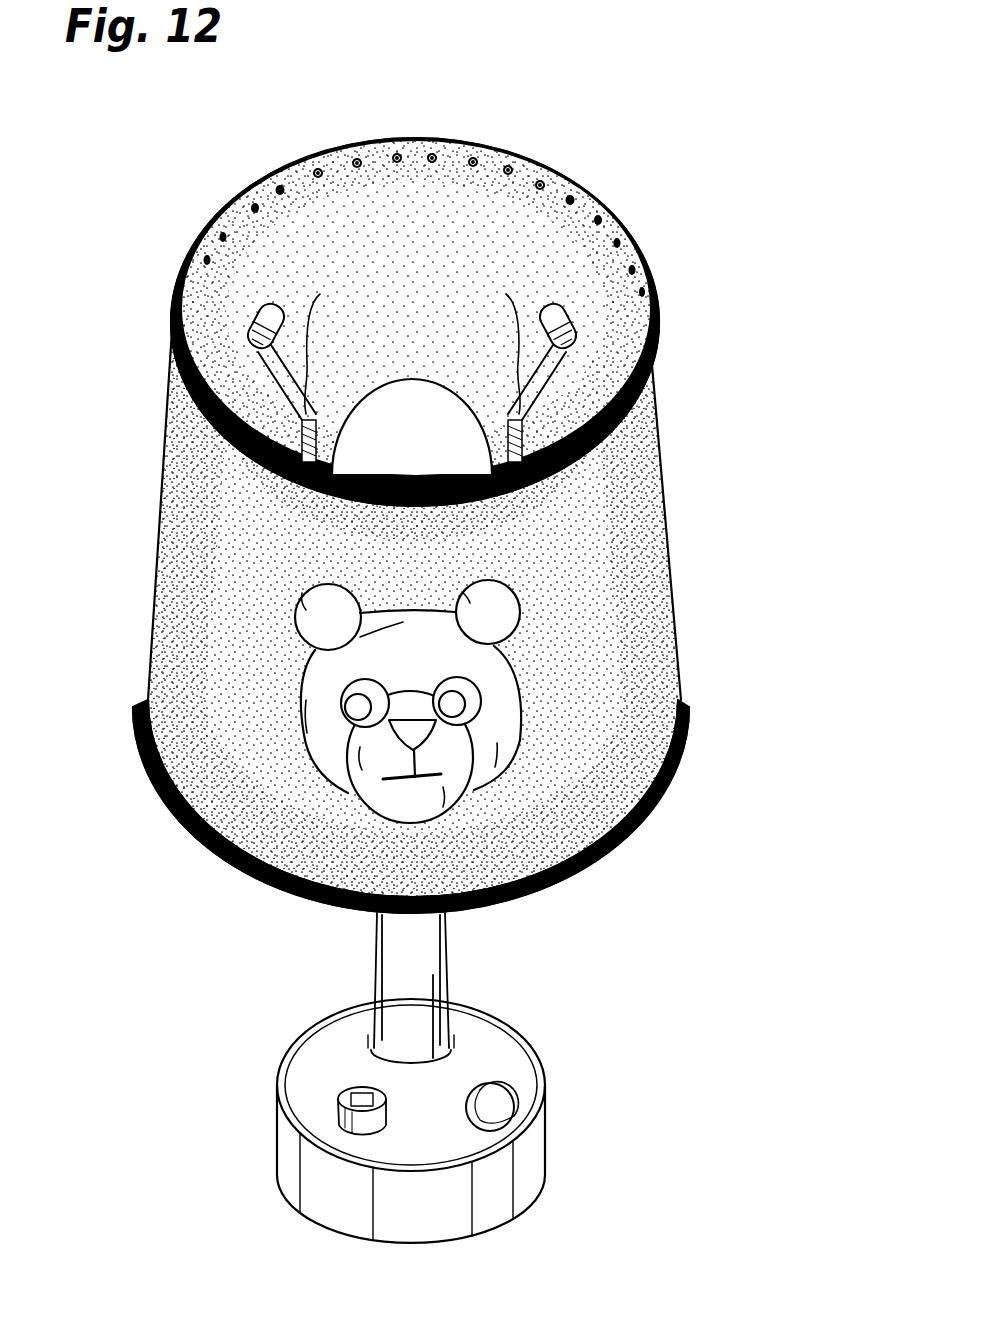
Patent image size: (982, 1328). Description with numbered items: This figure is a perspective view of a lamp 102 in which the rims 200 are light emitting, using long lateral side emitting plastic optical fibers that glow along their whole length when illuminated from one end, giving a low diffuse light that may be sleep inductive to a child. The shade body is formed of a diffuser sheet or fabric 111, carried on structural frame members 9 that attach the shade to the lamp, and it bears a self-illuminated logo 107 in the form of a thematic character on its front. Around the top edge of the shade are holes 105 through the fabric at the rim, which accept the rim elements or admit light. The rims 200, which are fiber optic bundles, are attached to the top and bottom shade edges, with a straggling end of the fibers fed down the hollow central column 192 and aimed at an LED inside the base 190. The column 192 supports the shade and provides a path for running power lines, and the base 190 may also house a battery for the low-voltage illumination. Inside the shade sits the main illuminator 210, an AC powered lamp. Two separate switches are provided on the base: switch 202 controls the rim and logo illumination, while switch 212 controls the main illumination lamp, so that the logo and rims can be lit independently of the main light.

The lamp 102 is at (138, 278).
The holes 105 is at (510, 165).
The rims 200 is at (663, 313).
The structural frame members 9 is at (412, 370).
The main illuminator 210 is at (422, 450).
The diffuser sheet or fabric 111 is at (650, 537).
The self-illuminated logo 107 is at (271, 657).
The hollow column 192 is at (445, 943).
The base 190 is at (507, 1050).
The switch 202 is at (342, 1095).
The switch 212 is at (514, 1100).